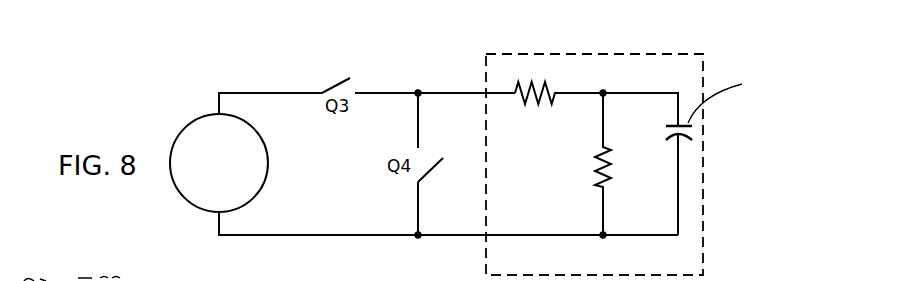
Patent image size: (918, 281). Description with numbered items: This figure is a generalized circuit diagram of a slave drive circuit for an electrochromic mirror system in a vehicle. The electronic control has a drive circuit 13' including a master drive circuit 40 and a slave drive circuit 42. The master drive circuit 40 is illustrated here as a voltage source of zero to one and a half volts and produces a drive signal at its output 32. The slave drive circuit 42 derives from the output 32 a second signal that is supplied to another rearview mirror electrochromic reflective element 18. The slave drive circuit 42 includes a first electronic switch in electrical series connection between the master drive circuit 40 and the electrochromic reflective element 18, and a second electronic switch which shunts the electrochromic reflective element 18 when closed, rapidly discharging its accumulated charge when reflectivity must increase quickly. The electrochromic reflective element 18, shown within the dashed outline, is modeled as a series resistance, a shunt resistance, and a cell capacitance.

The output 32 is at (239, 92).
The master drive circuit 40 is at (268, 155).
The drive circuit 13' is at (405, 63).
The slave drive circuit 42 is at (457, 76).
The electrochromic reflective element 18 is at (651, 54).